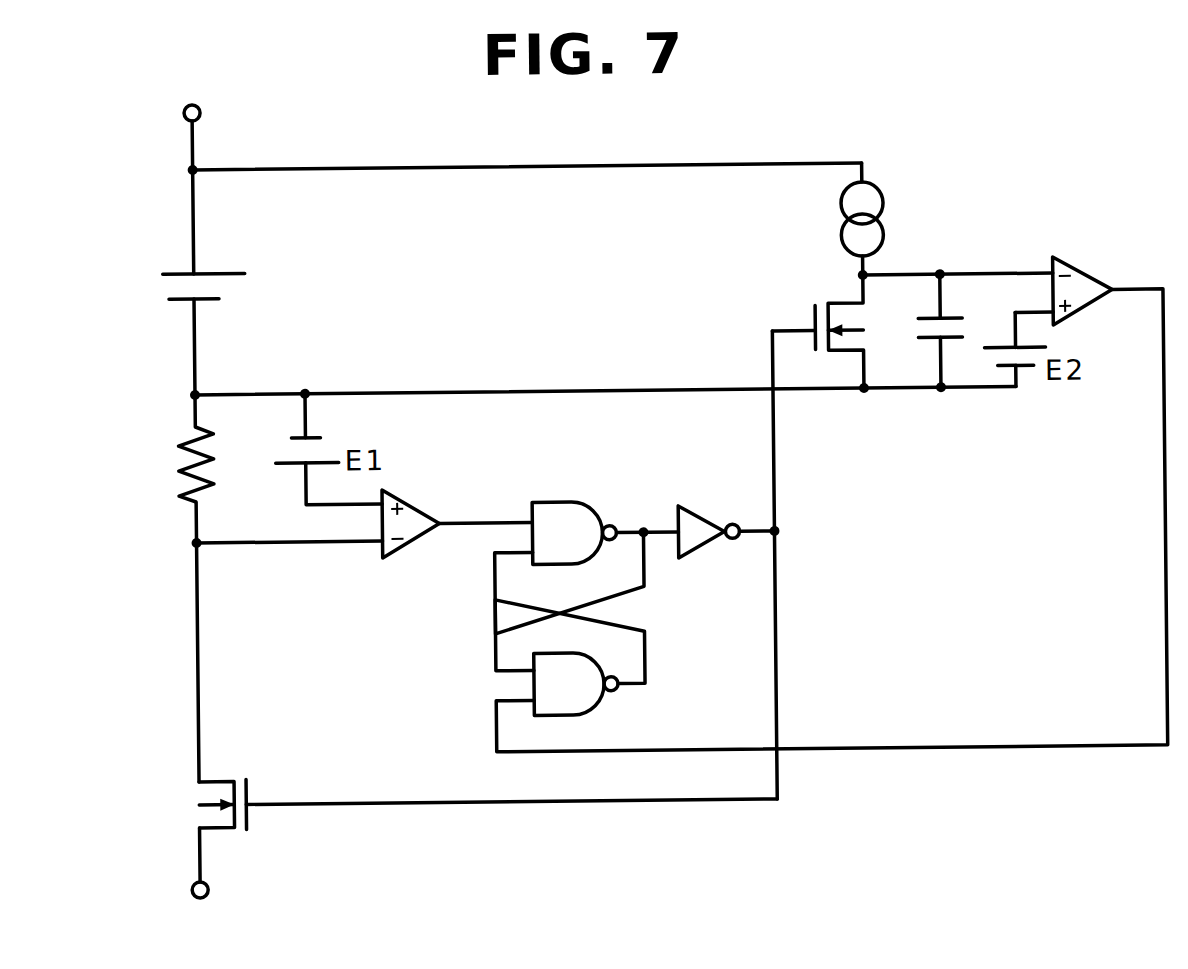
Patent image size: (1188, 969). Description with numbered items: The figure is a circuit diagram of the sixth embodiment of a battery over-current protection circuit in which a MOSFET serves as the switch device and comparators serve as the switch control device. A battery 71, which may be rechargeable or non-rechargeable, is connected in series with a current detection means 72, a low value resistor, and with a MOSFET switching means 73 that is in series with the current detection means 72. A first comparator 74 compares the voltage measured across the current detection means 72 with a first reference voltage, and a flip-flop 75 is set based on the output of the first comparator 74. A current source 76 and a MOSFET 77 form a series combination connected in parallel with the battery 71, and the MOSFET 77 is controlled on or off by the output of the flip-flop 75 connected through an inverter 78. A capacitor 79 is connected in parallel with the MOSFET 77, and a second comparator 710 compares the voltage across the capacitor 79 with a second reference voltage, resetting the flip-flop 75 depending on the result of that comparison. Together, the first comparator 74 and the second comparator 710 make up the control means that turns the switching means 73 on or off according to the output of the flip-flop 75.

The battery 71 is at (172, 283).
The current detection means 72 is at (182, 457).
The MOSFET switching means 73 is at (195, 805).
The first comparator 74 is at (402, 556).
The flip-flop 75 is at (627, 609).
The current source 76 is at (840, 223).
The MOSFET 77 is at (800, 313).
The inverter 78 is at (696, 516).
The capacitor 79 is at (956, 312).
The second comparator 710 is at (1086, 276).